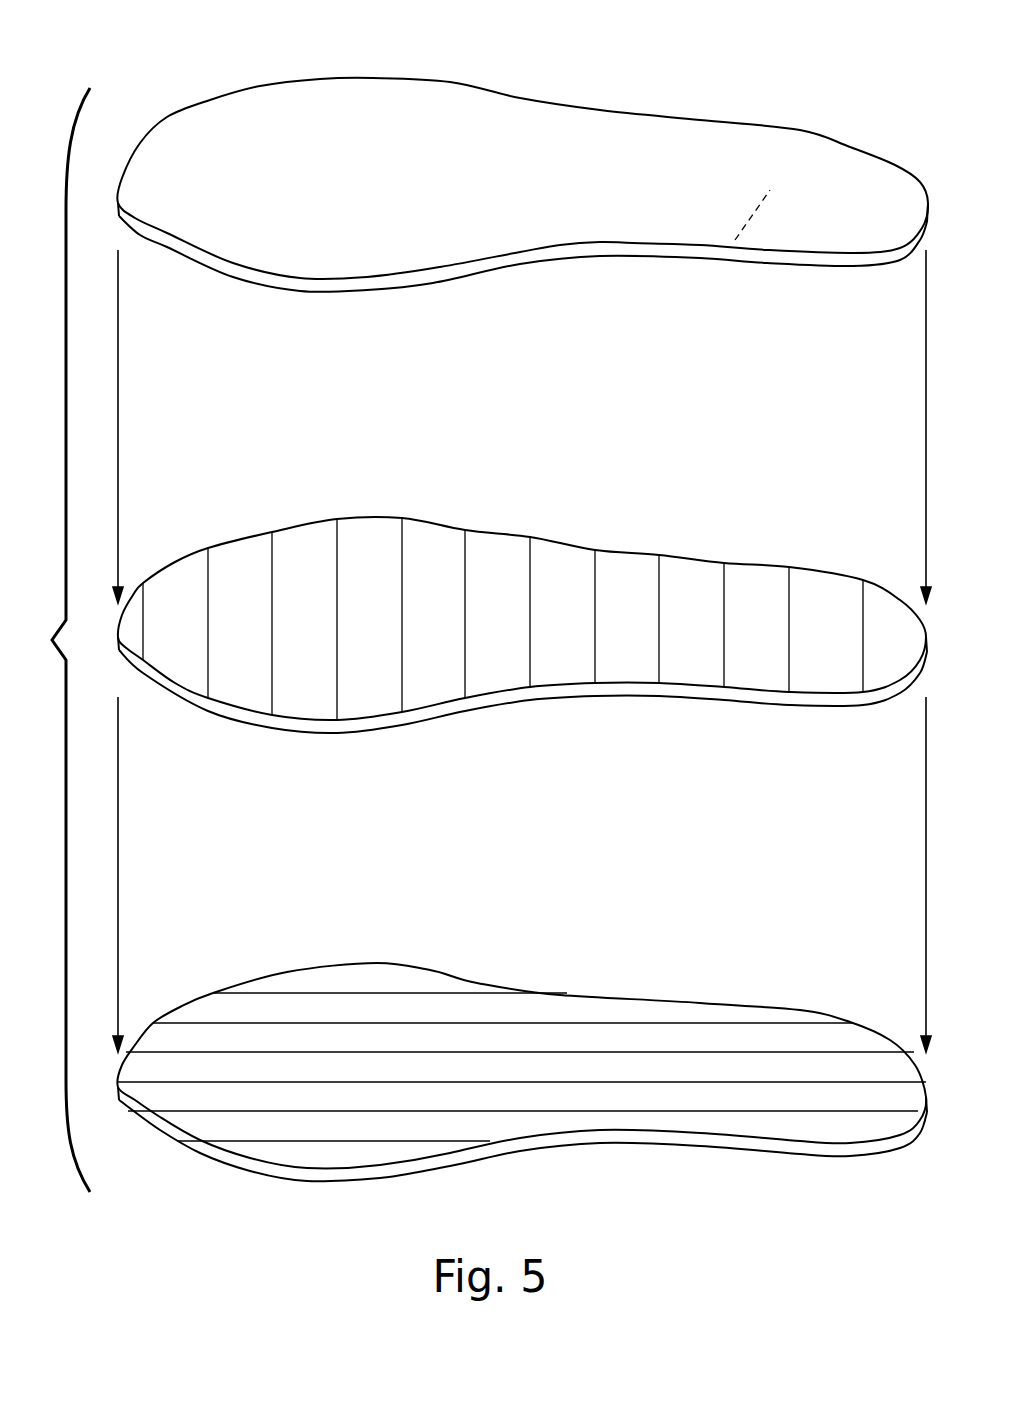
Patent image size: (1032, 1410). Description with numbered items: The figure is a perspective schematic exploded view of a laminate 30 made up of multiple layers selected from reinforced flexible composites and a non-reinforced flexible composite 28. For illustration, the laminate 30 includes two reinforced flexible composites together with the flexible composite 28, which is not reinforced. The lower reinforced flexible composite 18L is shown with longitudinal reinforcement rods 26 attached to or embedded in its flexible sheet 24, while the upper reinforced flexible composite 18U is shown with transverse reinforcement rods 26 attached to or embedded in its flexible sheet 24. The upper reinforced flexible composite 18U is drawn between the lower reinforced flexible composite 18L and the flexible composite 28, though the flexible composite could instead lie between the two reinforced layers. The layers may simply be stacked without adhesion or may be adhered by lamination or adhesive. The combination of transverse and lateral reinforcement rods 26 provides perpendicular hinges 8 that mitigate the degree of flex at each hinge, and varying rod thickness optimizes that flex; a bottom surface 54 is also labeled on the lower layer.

The perpendicular hinges 8 is at (378, 693).
The upper reinforced flexible composite 18U is at (923, 647).
The lower reinforced flexible composite 18L is at (912, 1068).
The flexible sheet 24 is at (735, 240).
The reinforcement rods 26 is at (467, 548).
The flexible composite 28 is at (242, 125).
The laminate 30 is at (52, 640).
The bottom surface 54 is at (558, 1140).